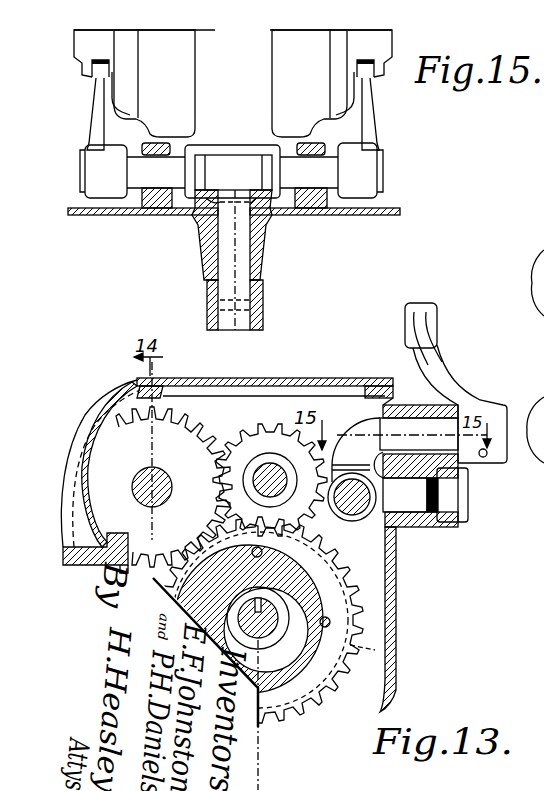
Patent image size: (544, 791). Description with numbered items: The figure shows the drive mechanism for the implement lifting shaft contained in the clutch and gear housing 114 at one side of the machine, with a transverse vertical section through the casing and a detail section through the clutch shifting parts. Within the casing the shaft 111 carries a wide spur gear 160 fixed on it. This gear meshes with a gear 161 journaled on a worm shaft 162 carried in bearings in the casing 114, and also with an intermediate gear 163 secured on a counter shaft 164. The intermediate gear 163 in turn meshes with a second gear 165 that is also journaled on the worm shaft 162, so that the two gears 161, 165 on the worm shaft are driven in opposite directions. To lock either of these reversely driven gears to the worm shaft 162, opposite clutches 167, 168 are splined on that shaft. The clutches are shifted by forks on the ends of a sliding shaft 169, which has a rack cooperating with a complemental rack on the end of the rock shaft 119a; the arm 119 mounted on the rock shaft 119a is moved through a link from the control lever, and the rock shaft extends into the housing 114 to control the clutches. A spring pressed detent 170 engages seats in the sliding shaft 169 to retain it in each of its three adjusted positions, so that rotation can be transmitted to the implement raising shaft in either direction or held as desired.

In FIG. 13, the shaft 111 is at (163, 473).
In FIG. 13, the clutch and gear housing 114 is at (397, 636).
In FIG. 15, the arm 119 is at (262, 297).
In FIG. 13, the arm 119 is at (445, 367).
In FIG. 15, the rock shaft 119a is at (213, 240).
In FIG. 13, the wide spur gear 160 is at (120, 445).
In FIG. 13, the gear 161 is at (308, 708).
In FIG. 13, the worm shaft 162 is at (262, 617).
In FIG. 13, the intermediate gear 163 is at (268, 455).
In FIG. 13, the counter shaft 164 is at (266, 468).
In FIG. 13, the second gear 165 is at (395, 660).
In FIG. 15, the clutch 167 is at (189, 72).
In FIG. 15, the clutch 168 is at (274, 66).
In FIG. 15, the sliding shaft 169 is at (164, 181).
In FIG. 13, the sliding shaft 169 is at (358, 520).
In FIG. 13, the spring pressed detent 170 is at (405, 505).